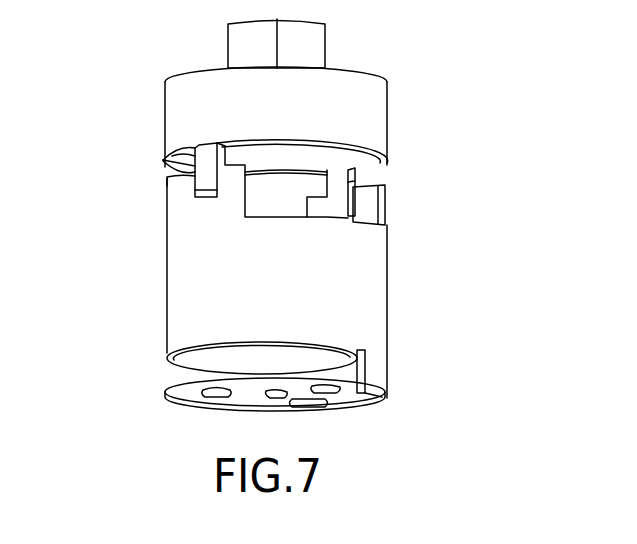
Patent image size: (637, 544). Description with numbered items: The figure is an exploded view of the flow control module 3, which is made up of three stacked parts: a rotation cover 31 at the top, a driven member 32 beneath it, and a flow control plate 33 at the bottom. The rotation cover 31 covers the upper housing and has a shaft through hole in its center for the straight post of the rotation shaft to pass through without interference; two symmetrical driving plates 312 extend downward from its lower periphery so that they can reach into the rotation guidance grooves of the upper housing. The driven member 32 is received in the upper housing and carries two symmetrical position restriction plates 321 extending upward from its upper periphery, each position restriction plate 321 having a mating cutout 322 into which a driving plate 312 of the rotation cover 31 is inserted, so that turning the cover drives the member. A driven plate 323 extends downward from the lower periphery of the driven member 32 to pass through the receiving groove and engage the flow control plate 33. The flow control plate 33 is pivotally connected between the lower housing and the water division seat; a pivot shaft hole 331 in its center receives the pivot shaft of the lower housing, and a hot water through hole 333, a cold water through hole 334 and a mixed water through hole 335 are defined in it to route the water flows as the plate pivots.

The flow control module 3 is at (85, 174).
The rotation cover 31 is at (377, 73).
The driving plate 312 is at (201, 162).
The driven member 32 is at (386, 284).
The position restriction plate 321 is at (207, 170).
The mating cutout 322 is at (195, 188).
The driven plate 323 is at (362, 371).
The flow control plate 33 is at (169, 394).
The pivot shaft hole 331 is at (268, 400).
The hot water through hole 333 is at (213, 397).
The cold water through hole 334 is at (305, 405).
The mixed water through hole 335 is at (325, 394).